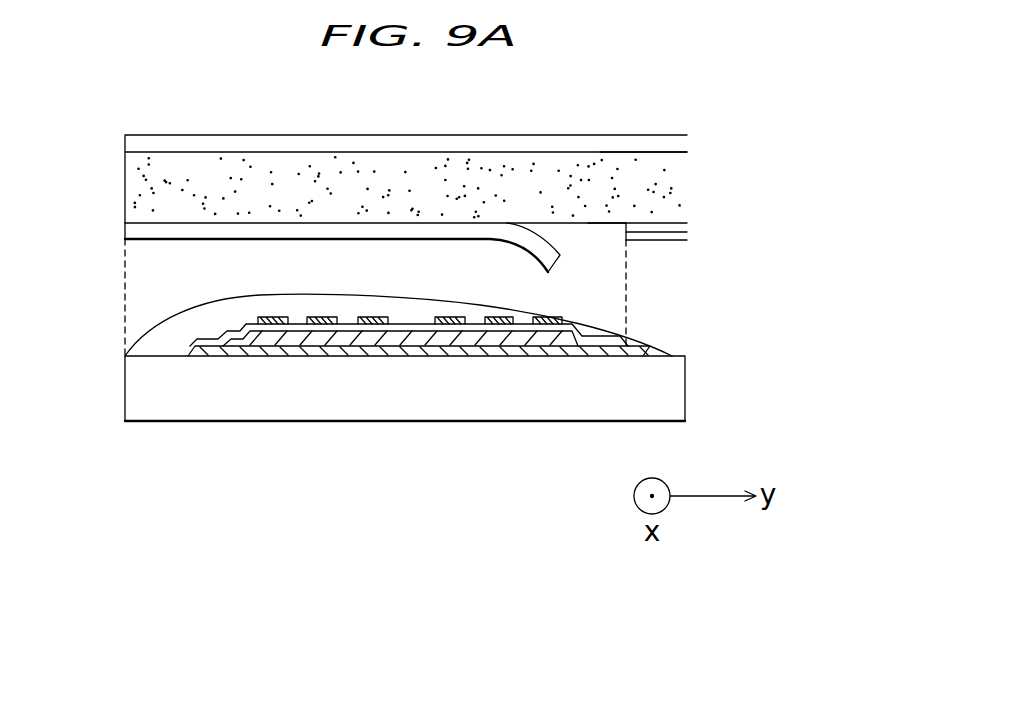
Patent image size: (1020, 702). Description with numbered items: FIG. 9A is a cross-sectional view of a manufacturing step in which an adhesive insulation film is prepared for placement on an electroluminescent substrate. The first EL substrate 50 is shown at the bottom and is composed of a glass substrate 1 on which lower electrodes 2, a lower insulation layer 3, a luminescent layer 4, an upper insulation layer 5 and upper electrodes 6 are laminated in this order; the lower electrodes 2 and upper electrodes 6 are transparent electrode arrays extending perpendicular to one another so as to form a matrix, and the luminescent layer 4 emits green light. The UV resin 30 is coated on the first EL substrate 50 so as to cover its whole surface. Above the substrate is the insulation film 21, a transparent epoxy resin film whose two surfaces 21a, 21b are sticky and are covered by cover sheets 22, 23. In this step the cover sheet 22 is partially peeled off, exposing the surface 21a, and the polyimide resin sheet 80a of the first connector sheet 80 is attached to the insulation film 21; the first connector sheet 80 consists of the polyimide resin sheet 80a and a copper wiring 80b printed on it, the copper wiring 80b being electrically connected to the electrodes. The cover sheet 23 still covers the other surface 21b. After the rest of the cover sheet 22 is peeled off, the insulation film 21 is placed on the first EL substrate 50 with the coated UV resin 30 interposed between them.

The glass substrate 1 is at (440, 421).
The lower electrodes 2 is at (467, 421).
The lower insulation layer 3 is at (497, 348).
The luminescent layer 4 is at (527, 331).
The upper insulation layer 5 is at (547, 323).
The upper electrodes 6 is at (560, 320).
The first EL substrate 50 is at (600, 507).
The UV resin 30 is at (637, 340).
The insulation film 21 is at (160, 192).
The surface of insulation film 21a is at (590, 223).
The surface of insulation film 21b is at (650, 152).
The cover sheet 22 is at (153, 228).
The cover sheet 23 is at (150, 143).
The first connector sheet 80 is at (758, 212).
The polyimide resin sheet 80a is at (685, 226).
The copper wiring 80b is at (685, 238).